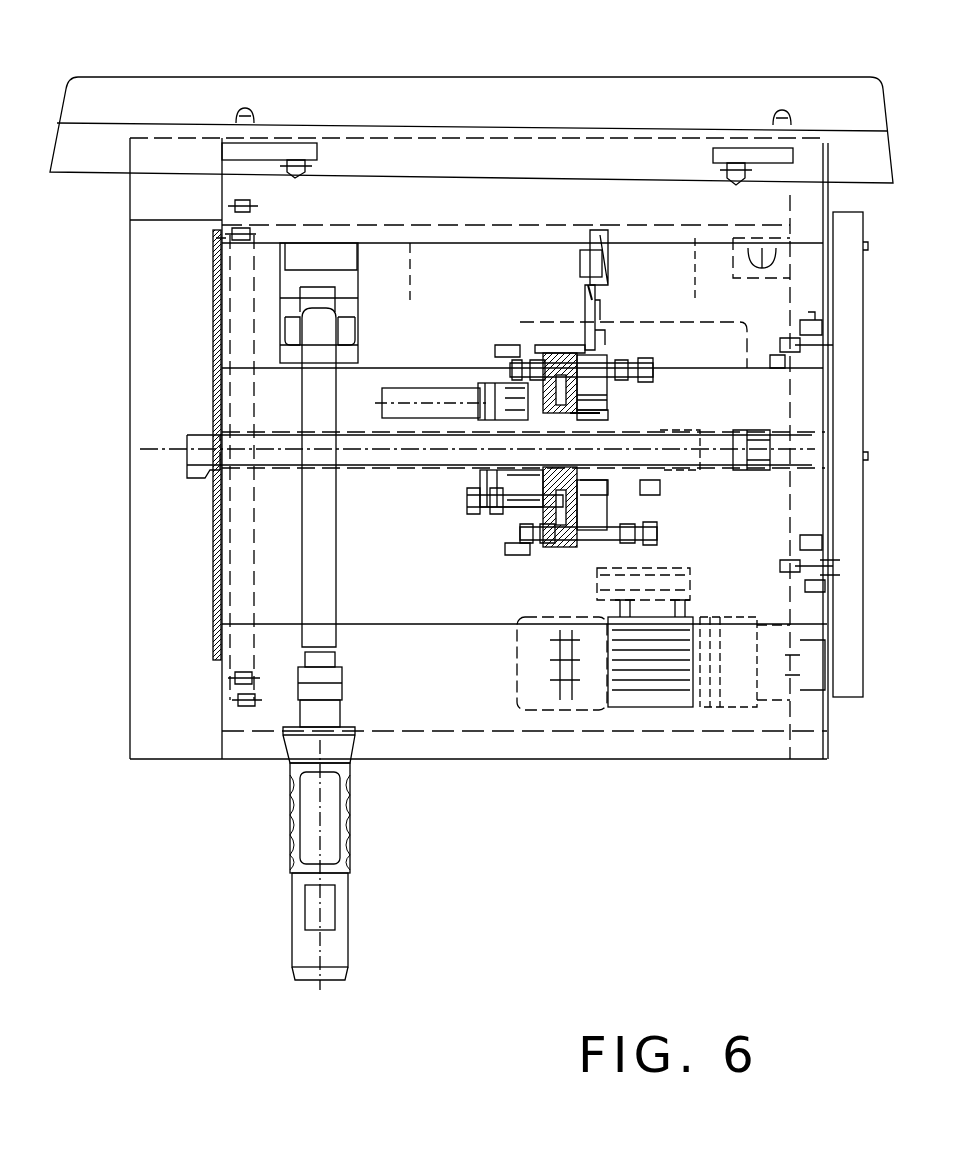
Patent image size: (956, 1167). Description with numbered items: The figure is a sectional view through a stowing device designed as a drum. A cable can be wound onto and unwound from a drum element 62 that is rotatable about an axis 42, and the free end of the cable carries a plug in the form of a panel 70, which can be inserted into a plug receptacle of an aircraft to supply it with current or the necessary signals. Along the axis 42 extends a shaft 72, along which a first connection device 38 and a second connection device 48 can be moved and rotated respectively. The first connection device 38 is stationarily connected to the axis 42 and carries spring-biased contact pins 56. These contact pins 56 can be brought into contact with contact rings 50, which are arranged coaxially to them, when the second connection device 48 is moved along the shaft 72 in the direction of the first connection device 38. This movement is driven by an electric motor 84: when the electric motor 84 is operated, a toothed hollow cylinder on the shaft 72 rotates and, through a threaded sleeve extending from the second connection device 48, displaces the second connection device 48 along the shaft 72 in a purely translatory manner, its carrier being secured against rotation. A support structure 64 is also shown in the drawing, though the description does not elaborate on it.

The first connection device 38 is at (578, 408).
The axis 42 is at (165, 450).
The second connection device 48 is at (548, 358).
The contact rings 50 is at (575, 358).
The contact pins 56 is at (572, 410).
The drum element 62 is at (290, 228).
The support column base 64 is at (312, 580).
The panel 70 is at (333, 952).
The shaft 72 is at (352, 455).
The electric motor 84 is at (430, 395).